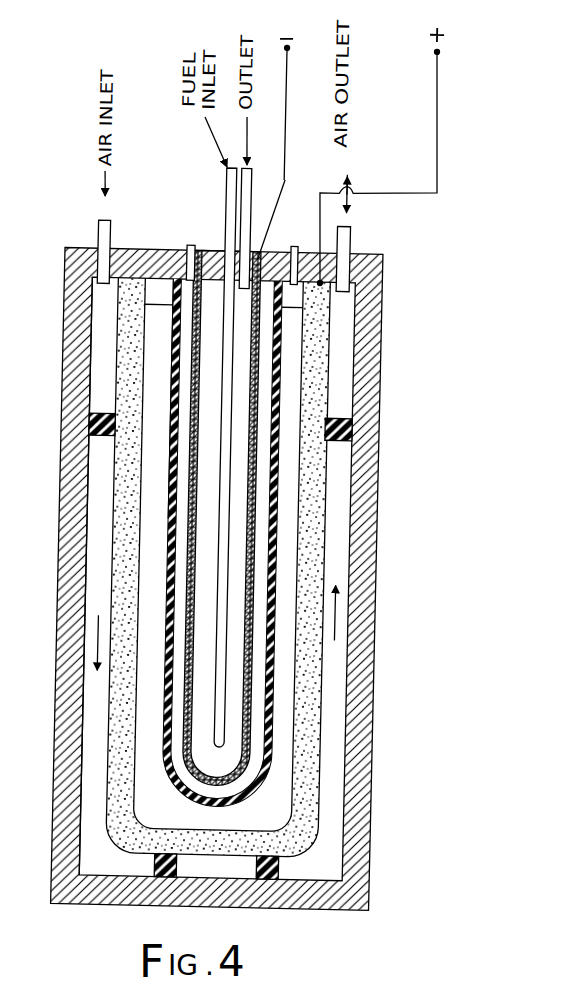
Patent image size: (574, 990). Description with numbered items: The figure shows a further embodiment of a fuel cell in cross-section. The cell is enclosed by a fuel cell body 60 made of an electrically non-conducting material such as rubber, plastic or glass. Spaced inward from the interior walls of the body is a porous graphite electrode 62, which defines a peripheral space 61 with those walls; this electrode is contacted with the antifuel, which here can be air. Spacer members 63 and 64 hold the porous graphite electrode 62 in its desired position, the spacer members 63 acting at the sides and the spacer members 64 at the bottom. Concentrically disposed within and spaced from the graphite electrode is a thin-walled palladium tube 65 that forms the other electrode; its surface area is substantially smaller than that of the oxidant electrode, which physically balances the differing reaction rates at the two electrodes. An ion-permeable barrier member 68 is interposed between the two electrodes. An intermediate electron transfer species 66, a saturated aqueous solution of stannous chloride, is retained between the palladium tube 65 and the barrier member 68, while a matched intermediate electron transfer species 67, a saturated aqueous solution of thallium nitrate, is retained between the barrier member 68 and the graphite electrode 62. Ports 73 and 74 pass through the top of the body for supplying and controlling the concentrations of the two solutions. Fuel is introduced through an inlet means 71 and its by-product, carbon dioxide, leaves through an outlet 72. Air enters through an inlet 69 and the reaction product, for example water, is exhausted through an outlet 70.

The fuel cell body 60 is at (372, 572).
The peripheral space 61 is at (102, 493).
The porous graphite electrode 62 is at (125, 362).
The spacer member 63 is at (94, 431).
The spacer member 64 is at (178, 871).
The thin-walled palladium tube 65 is at (263, 261).
The intermediate electron transfer species 66 is at (193, 596).
The intermediate electron transfer species 67 is at (288, 679).
The ion-permeable barrier member 68 is at (175, 291).
The air inlet 69 is at (98, 238).
The air outlet 70 is at (350, 237).
The fuel inlet means 71 is at (224, 195).
The fuel outlet 72 is at (249, 190).
The port 73 is at (191, 247).
The port 74 is at (296, 245).